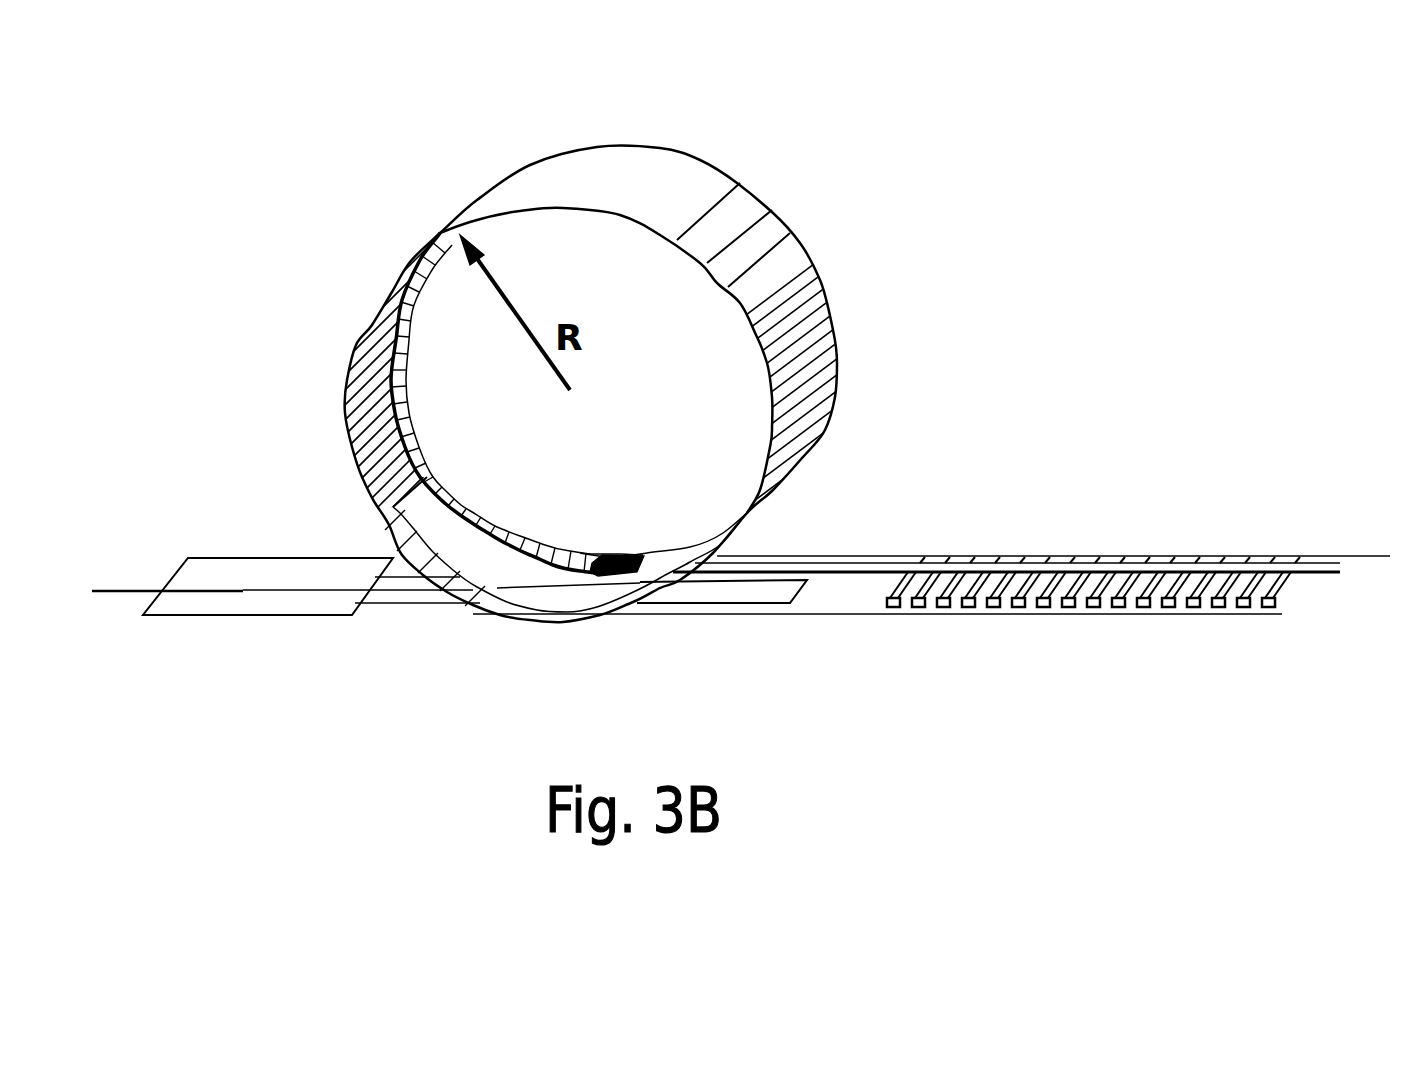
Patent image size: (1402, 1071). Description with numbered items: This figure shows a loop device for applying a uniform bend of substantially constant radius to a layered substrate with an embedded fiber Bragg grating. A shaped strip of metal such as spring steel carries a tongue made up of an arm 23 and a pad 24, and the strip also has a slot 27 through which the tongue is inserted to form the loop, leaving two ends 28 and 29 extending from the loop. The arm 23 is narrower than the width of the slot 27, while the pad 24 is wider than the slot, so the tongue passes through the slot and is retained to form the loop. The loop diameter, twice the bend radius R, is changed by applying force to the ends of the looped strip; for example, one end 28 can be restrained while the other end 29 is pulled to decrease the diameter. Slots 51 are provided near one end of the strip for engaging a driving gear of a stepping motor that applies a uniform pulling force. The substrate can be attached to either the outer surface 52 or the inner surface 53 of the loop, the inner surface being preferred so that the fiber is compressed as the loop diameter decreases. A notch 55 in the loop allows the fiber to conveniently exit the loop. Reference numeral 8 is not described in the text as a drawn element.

The flexible circuit 8 is at (1308, 557).
The arm 23 is at (394, 598).
The pad 24 is at (234, 573).
The slot 27 is at (766, 588).
The end 28 is at (165, 618).
The end 29 is at (1275, 607).
The slots 51 is at (1103, 603).
The outer surface 52 is at (612, 176).
The inner surface 53 is at (451, 490).
The notch 55 is at (611, 556).